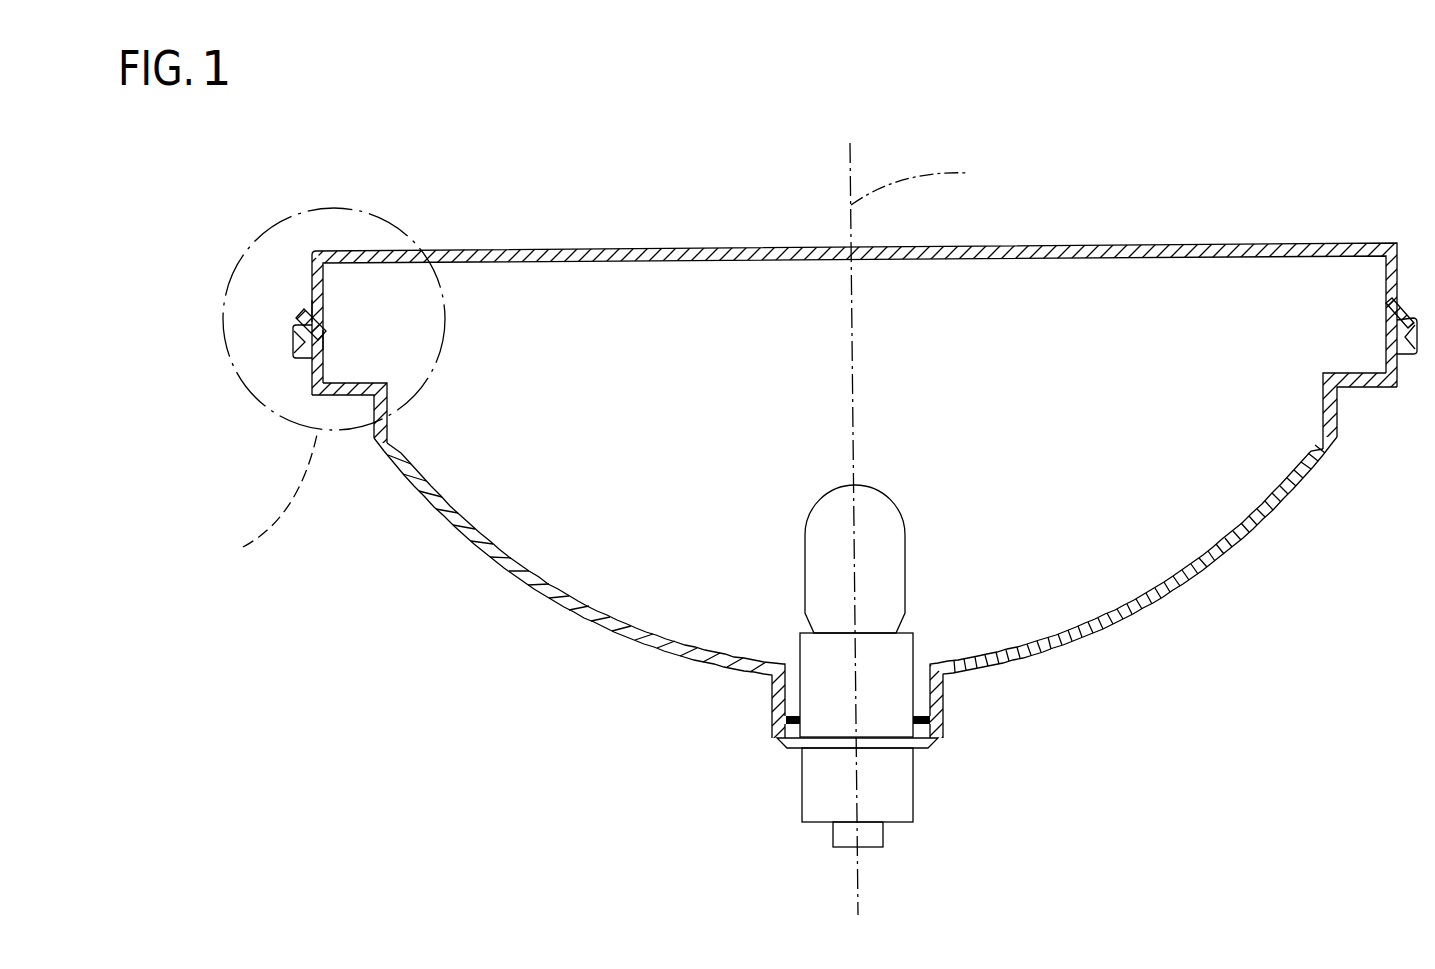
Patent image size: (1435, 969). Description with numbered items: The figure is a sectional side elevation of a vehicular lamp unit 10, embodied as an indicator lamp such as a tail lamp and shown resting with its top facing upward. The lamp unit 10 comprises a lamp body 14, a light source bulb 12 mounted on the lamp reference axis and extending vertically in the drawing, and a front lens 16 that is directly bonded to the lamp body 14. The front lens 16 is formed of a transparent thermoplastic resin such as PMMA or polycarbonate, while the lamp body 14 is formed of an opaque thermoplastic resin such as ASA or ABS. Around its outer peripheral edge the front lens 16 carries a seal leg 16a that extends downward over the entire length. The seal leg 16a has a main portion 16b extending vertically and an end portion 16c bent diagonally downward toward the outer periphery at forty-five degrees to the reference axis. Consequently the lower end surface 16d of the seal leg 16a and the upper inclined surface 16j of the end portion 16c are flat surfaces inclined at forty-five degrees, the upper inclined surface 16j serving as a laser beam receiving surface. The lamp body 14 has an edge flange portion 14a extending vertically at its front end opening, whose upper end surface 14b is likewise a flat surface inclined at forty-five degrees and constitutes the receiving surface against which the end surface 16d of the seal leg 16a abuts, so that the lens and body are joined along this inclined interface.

The vehicular lamp unit 10 is at (1186, 203).
The light source bulb 12 is at (820, 488).
The lamp body 14 is at (583, 637).
The edge flange portion 14a is at (310, 370).
The end surface of the edge flange portion 14b is at (307, 308).
The front lens 16 is at (640, 238).
The seal leg 16a is at (307, 284).
The main portion of the seal leg 16b is at (323, 288).
The end portion of the seal leg 16c is at (302, 320).
The end surface of the seal leg 16d is at (322, 337).
The upper inclined surface 16j is at (305, 312).